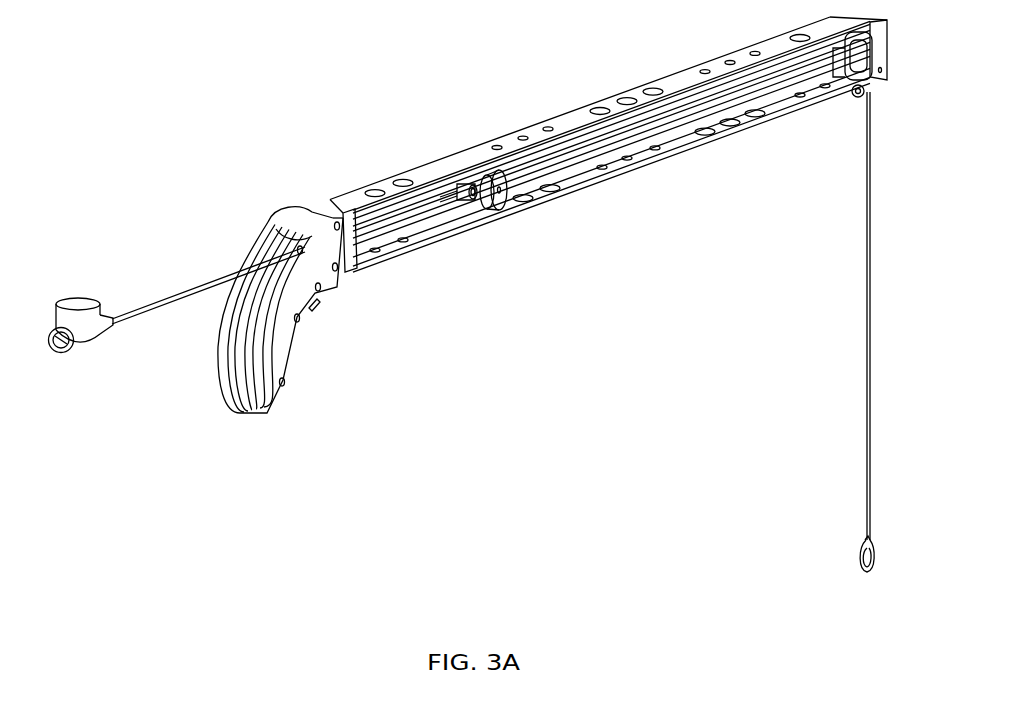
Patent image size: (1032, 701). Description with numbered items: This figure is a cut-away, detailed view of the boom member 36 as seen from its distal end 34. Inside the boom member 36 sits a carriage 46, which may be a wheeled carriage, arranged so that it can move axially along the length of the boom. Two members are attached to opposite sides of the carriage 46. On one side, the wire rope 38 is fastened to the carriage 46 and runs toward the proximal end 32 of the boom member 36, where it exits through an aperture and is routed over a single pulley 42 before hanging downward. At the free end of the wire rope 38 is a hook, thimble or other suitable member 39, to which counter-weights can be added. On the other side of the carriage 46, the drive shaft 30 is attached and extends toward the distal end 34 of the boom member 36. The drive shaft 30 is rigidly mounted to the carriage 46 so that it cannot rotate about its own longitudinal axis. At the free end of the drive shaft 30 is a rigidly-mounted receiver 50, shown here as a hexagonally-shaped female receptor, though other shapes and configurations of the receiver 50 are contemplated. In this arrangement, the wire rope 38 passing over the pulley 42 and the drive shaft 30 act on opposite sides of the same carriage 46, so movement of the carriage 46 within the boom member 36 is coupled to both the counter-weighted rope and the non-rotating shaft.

The drive shaft 30 is at (152, 302).
The proximal end 32 is at (908, 68).
The distal end 34 is at (233, 238).
The boom member 36 is at (437, 160).
The wire rope 38 is at (866, 308).
The hook, thimble or other suitable member 39 is at (862, 571).
The single pulley 42 is at (852, 97).
The carriage 46 is at (502, 210).
The receiver 50 is at (87, 343).